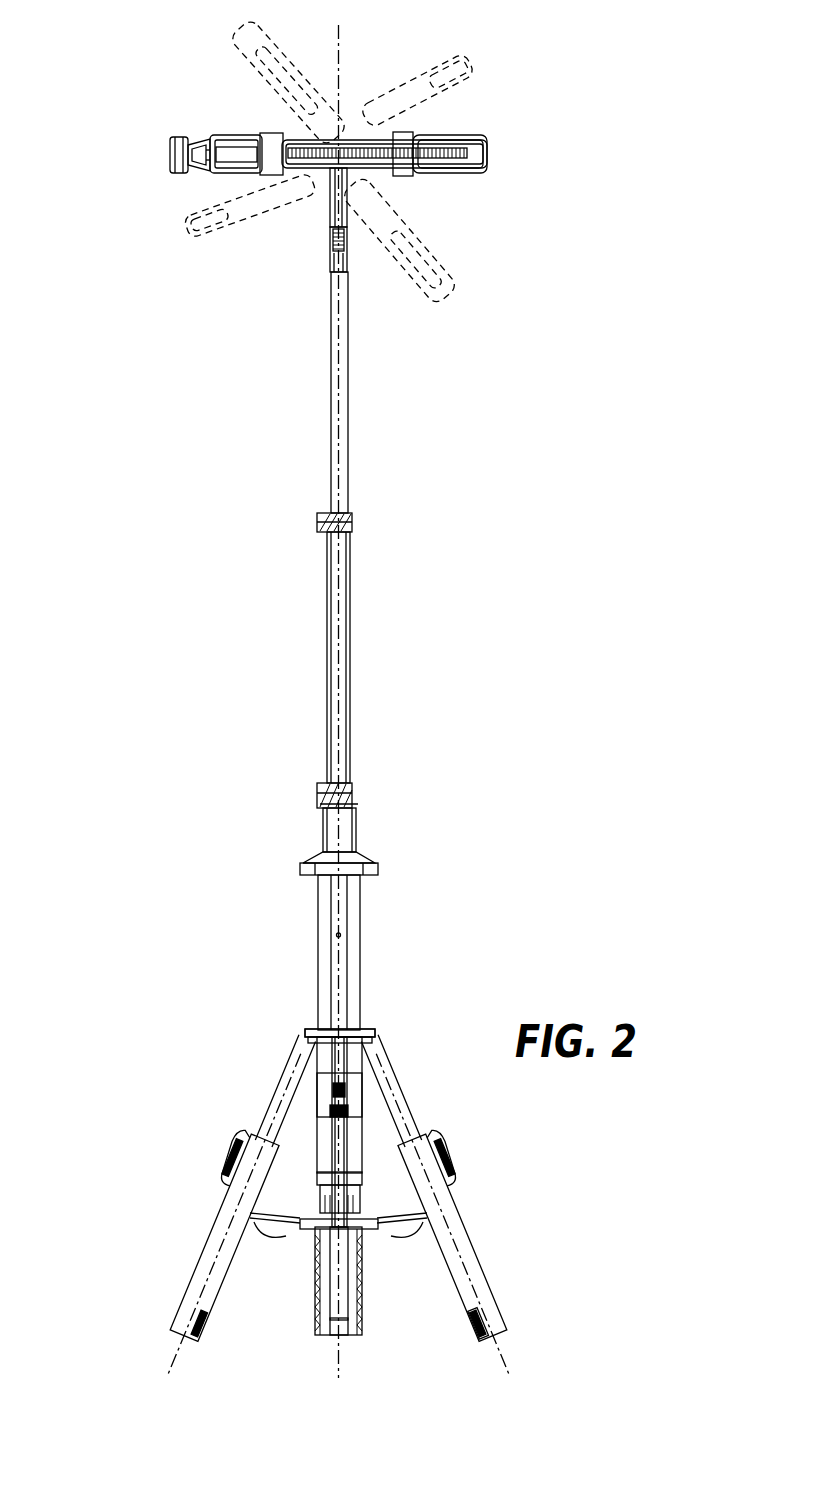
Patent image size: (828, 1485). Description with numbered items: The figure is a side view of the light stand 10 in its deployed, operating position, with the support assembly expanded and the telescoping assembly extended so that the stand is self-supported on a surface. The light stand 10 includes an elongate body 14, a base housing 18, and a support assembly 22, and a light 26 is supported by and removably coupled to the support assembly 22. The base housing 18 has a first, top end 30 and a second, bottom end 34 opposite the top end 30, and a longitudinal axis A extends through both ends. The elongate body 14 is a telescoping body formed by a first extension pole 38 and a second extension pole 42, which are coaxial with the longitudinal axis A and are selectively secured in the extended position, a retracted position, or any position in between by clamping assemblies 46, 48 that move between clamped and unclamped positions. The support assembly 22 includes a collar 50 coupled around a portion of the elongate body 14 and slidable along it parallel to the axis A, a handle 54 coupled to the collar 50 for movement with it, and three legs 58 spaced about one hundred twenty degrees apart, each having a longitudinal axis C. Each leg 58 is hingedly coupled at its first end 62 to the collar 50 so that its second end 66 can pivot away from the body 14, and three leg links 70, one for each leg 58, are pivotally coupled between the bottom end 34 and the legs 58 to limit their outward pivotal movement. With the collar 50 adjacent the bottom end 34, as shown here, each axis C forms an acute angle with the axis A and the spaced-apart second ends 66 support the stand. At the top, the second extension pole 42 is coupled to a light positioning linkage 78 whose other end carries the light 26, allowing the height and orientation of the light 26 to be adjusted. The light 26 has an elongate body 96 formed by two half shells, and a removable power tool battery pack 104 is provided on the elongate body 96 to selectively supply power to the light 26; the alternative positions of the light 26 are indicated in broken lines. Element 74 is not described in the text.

The light stand 10 is at (341, 700).
The elongate body 14 is at (318, 940).
The base housing 18 is at (372, 1237).
The support assembly 22 is at (347, 1177).
The light 26 is at (334, 141).
The top end 30 is at (351, 801).
The bottom end 34 is at (390, 1277).
The first extension pole 38 is at (350, 660).
The second extension pole 42 is at (350, 370).
The clamping assembly 46 is at (318, 793).
The clamping assembly 48 is at (318, 522).
The collar 50 is at (337, 1028).
The handle 54 is at (343, 1103).
The legs 58 is at (196, 1278).
The first end 62 is at (373, 1034).
The second end 66 is at (498, 1330).
The leg links 70 is at (245, 1237).
The pivot connector 74 is at (330, 257).
The light positioning linkage 78 is at (330, 207).
The elongate body 96 is at (428, 228).
The battery pack 104 is at (178, 143).